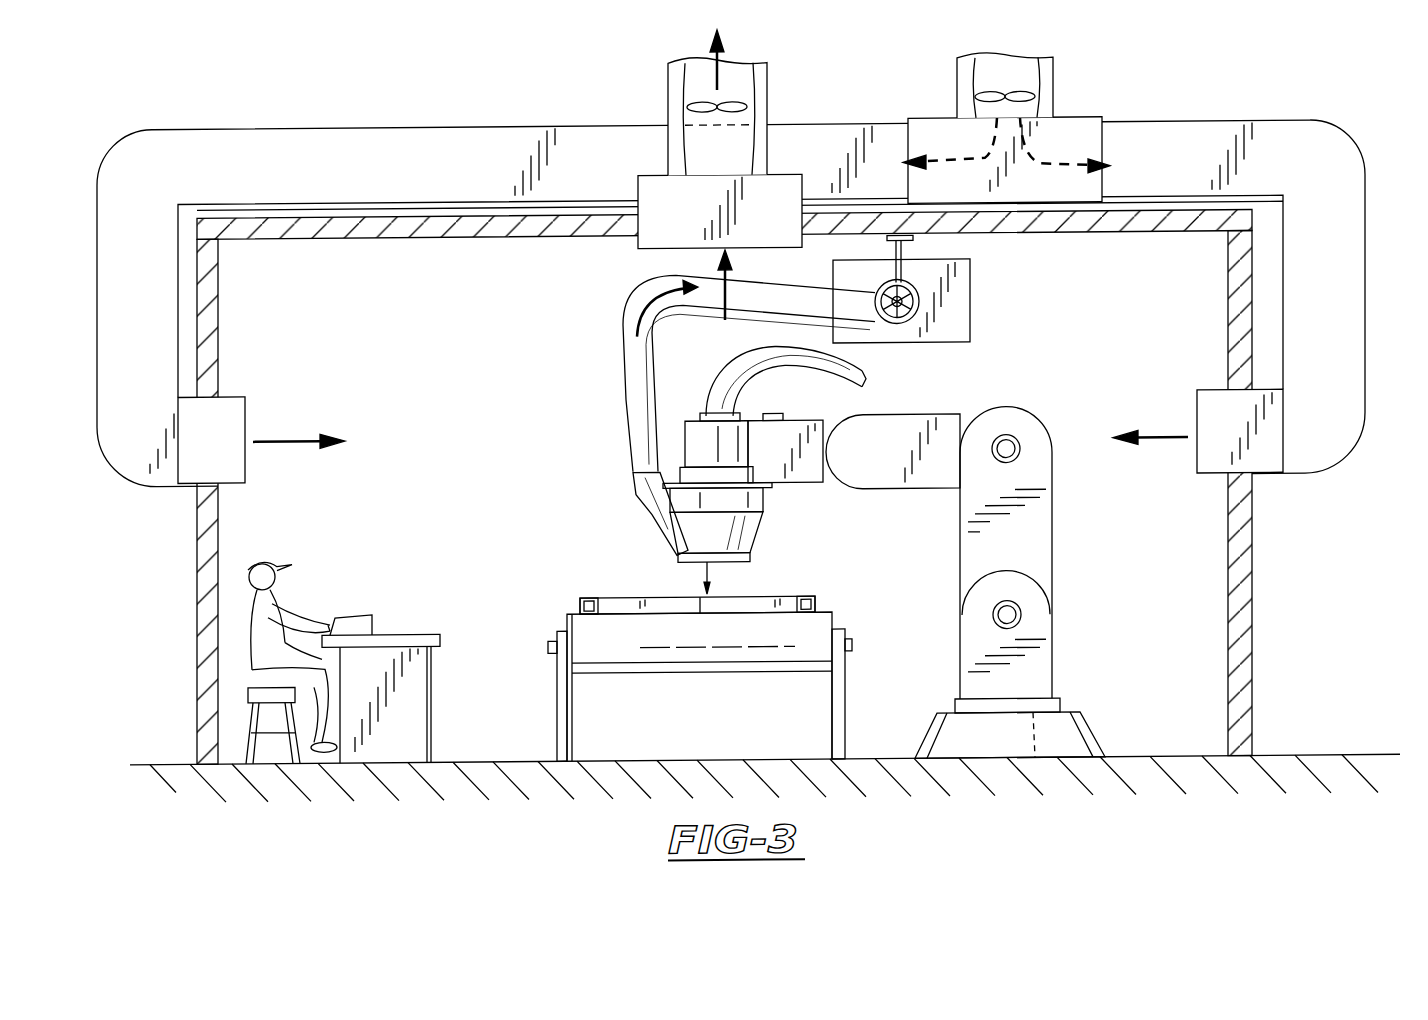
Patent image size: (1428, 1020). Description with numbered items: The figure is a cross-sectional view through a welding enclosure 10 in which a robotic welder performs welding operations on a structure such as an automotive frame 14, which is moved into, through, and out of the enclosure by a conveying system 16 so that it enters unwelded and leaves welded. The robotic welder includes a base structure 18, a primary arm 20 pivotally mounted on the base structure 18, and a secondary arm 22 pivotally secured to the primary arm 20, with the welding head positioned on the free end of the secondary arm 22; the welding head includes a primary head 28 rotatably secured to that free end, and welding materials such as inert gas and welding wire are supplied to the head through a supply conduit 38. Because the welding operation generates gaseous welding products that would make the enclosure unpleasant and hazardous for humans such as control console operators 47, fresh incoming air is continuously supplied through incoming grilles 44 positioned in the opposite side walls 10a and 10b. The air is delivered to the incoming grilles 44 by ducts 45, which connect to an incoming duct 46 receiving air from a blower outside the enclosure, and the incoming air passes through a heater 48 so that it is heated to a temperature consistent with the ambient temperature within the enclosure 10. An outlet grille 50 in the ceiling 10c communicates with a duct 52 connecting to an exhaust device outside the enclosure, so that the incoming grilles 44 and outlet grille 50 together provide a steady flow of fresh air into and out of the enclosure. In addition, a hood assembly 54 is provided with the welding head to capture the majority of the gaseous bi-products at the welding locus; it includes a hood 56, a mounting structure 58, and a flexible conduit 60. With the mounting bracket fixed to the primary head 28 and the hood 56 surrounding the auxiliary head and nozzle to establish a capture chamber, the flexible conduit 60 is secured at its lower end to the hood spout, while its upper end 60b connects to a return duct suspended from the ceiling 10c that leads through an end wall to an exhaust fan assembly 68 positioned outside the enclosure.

The welding enclosure 10 is at (1256, 548).
The side wall 10a is at (220, 532).
The side wall 10b is at (1228, 584).
The ceiling 10c is at (385, 244).
The automotive frame 14 is at (818, 612).
The conveying system 16 is at (845, 718).
The base structure 18 is at (1090, 733).
The primary arm 20 is at (1052, 540).
The secondary arm 22 is at (930, 425).
The primary head 28 is at (783, 416).
The supply conduit 38 is at (745, 376).
The incoming grilles 44 is at (245, 401).
The ducts 45 is at (1355, 232).
The incoming duct 46 is at (957, 92).
The control console operators 47 is at (294, 582).
The heater 48 is at (1090, 130).
The outlet grille 50 is at (638, 258).
The duct 52 is at (668, 108).
The hood assembly 54 is at (650, 531).
The hood 56 is at (762, 545).
The mounting structure 58 is at (700, 472).
The flexible conduit 60 is at (626, 345).
The upper end of conduit 60b is at (855, 304).
The exhaust fan assembly 68 is at (976, 292).